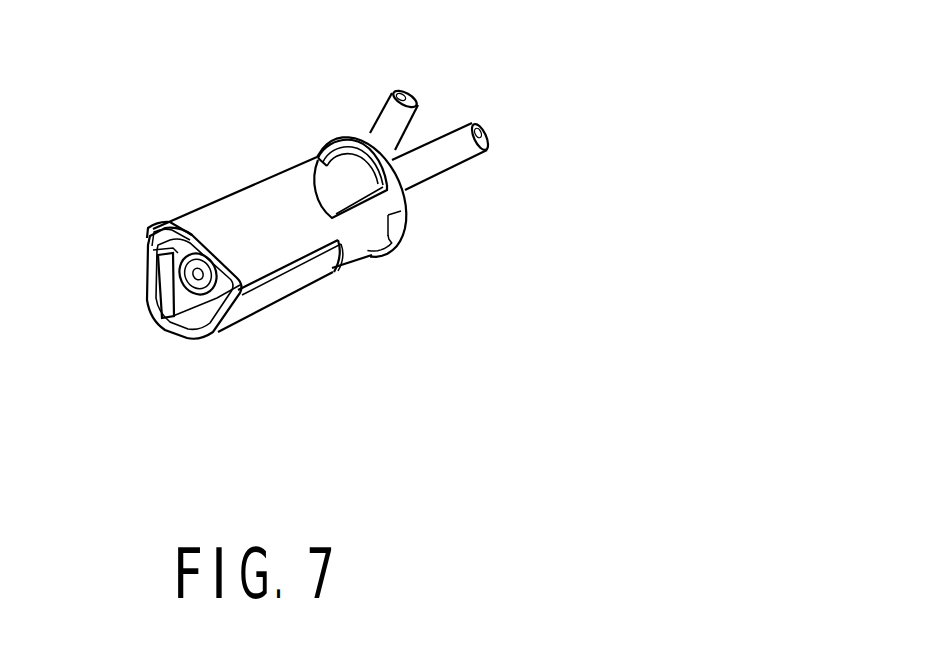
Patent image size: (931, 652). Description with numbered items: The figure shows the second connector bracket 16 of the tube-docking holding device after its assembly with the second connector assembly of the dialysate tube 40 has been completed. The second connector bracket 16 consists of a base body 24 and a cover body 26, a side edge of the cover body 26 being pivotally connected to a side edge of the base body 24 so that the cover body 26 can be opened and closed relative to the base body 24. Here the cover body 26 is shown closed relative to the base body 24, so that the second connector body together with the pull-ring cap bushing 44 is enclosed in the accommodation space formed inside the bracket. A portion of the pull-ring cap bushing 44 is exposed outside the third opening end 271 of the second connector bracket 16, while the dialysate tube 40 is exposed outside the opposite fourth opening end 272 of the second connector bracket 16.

The second connector bracket 16 is at (277, 148).
The cover body 26 is at (233, 213).
The fourth opening end 272 is at (405, 203).
The dialysate tube 40 is at (463, 150).
The base body 24 is at (284, 283).
The third opening end 271 is at (178, 289).
The pull-ring cap bushing 44 is at (154, 310).